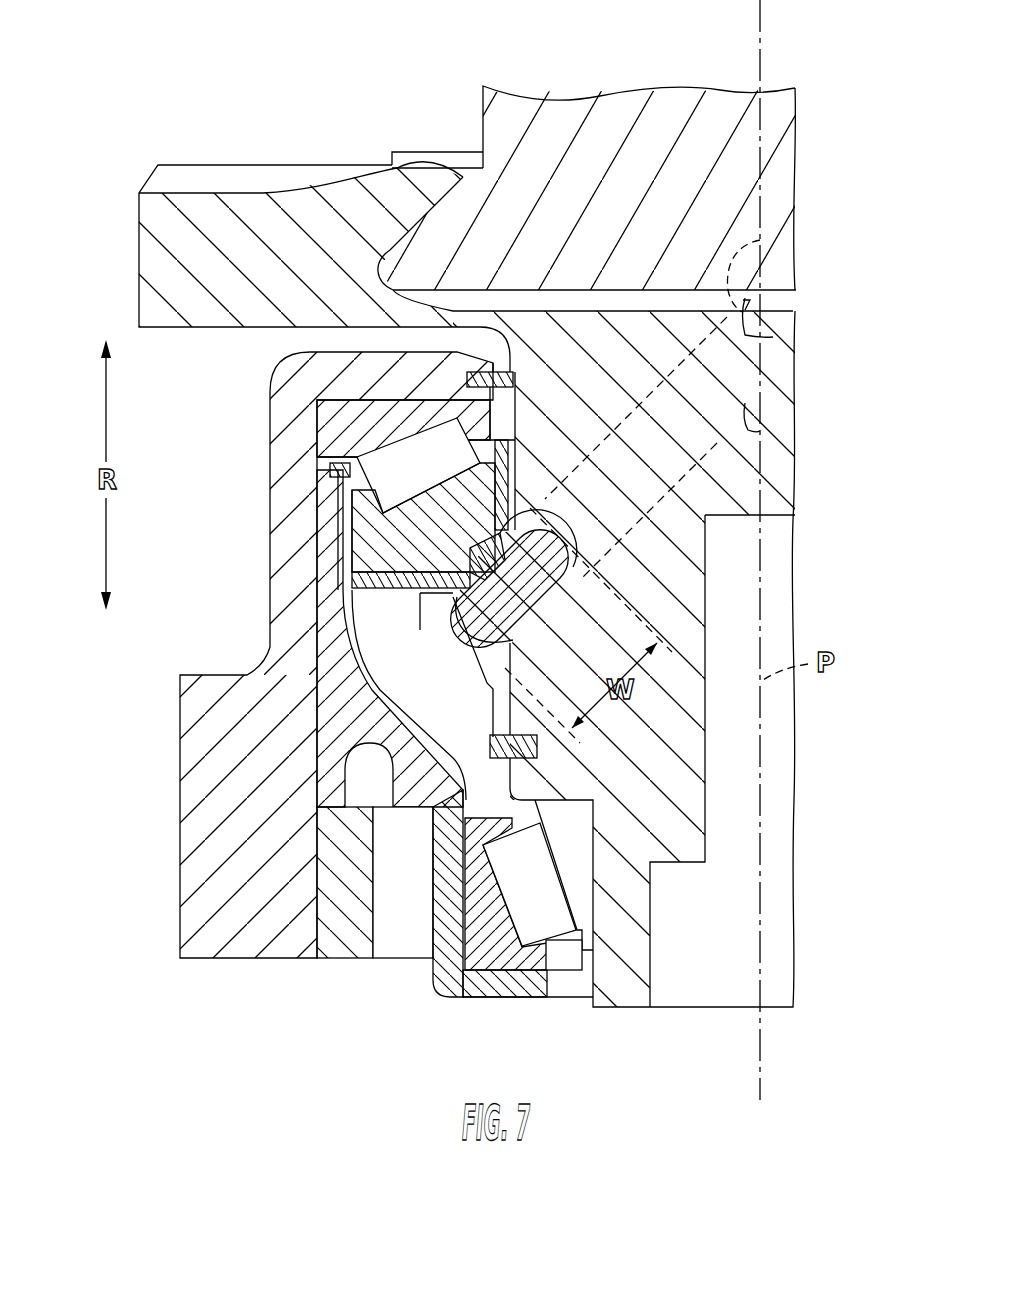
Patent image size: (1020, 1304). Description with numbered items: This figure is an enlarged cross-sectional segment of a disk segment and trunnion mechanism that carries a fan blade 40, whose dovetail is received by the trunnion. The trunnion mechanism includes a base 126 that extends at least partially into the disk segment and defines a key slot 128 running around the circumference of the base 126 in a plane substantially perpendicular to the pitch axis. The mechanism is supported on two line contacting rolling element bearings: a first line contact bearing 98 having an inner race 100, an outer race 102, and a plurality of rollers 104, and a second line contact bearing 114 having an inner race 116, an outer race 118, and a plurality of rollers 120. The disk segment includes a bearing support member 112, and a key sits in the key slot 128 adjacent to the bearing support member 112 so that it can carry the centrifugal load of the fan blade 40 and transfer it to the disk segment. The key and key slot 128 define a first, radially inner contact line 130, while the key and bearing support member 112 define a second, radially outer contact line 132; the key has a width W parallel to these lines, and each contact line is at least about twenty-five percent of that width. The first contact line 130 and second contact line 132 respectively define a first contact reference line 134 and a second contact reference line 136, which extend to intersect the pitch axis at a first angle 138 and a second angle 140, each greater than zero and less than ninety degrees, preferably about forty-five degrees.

The fan blade 40 is at (510, 138).
The first line contact bearing 98 is at (567, 968).
The inner race 100 is at (580, 857).
The outer race 102 is at (477, 943).
The rollers 104 is at (503, 967).
The bearing support member 112 is at (360, 577).
The second line contact bearing 114 is at (344, 472).
The inner race 116 is at (360, 508).
The outer race 118 is at (335, 427).
The rollers 120 is at (407, 452).
The base 126 is at (676, 623).
The key slot 128 is at (552, 537).
The first contact line 130 is at (480, 645).
The second contact line 132 is at (490, 572).
The first contact reference line 134 is at (717, 443).
The second contact reference line 136 is at (790, 233).
The first angle 138 is at (747, 430).
The second angle 140 is at (773, 337).